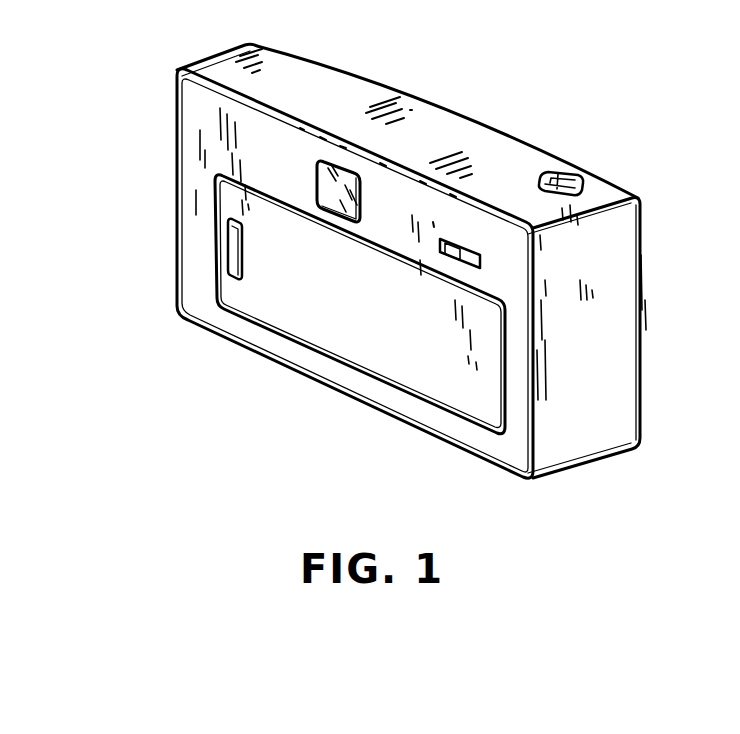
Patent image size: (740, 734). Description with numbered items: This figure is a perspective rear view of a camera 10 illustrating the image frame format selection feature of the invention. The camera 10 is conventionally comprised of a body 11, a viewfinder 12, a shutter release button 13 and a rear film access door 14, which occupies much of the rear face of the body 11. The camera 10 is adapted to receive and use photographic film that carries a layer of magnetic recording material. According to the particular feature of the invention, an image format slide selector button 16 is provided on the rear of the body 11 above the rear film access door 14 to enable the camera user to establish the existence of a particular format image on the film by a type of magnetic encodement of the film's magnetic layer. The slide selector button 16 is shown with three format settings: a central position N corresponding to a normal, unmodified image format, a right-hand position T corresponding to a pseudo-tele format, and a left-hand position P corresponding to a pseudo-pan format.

The camera 10 is at (222, 343).
The body 11 is at (175, 124).
The viewfinder 12 is at (336, 188).
The shutter release button 13 is at (563, 172).
The rear film access door 14 is at (305, 316).
The image format slide selector button 16 is at (447, 250).